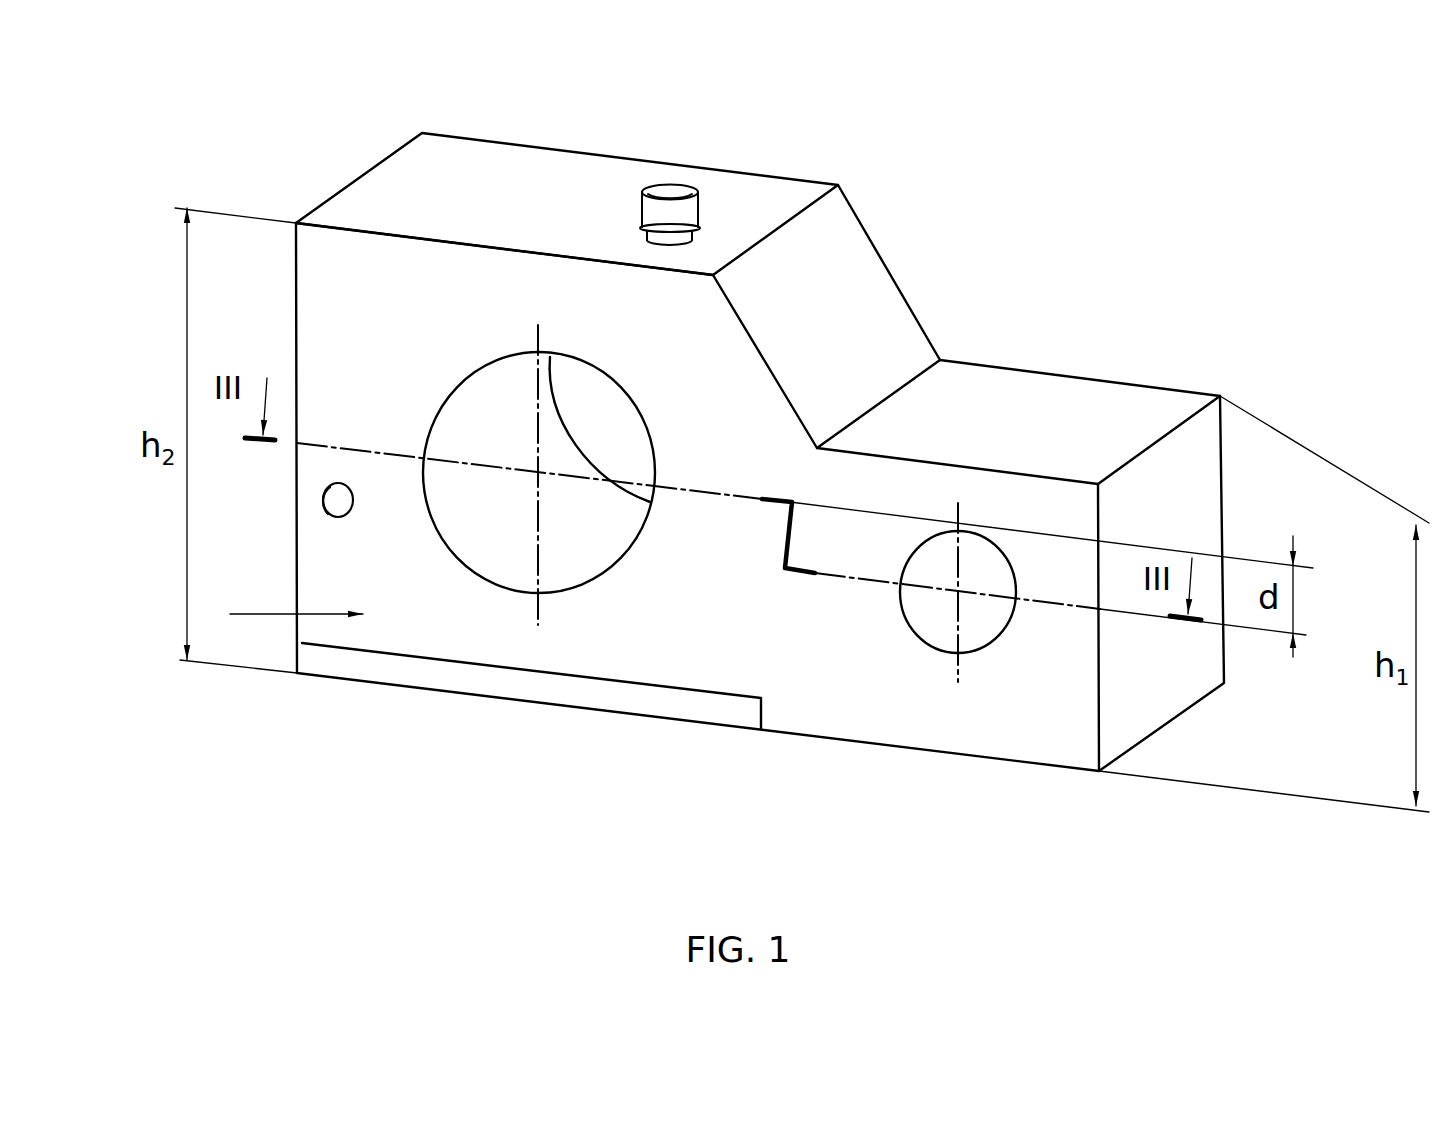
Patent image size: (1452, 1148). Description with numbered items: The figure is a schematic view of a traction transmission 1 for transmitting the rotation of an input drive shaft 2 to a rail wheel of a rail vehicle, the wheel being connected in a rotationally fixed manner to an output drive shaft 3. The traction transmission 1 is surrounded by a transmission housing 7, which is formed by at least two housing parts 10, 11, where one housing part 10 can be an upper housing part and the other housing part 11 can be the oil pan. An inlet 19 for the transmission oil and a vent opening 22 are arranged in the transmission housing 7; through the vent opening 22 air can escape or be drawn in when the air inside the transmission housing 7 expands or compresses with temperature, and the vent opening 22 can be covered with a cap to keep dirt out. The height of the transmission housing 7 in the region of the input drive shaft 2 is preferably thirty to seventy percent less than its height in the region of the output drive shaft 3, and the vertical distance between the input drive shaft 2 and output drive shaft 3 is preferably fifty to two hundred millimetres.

The traction transmission 1 is at (758, 627).
The input drive shaft 2 is at (958, 590).
The output drive shaft 3 is at (537, 473).
The transmission housing 7 is at (845, 317).
The housing part 10 is at (296, 599).
The housing part 11 is at (388, 675).
The inlet 19 is at (325, 512).
The vent opening 22 is at (687, 197).